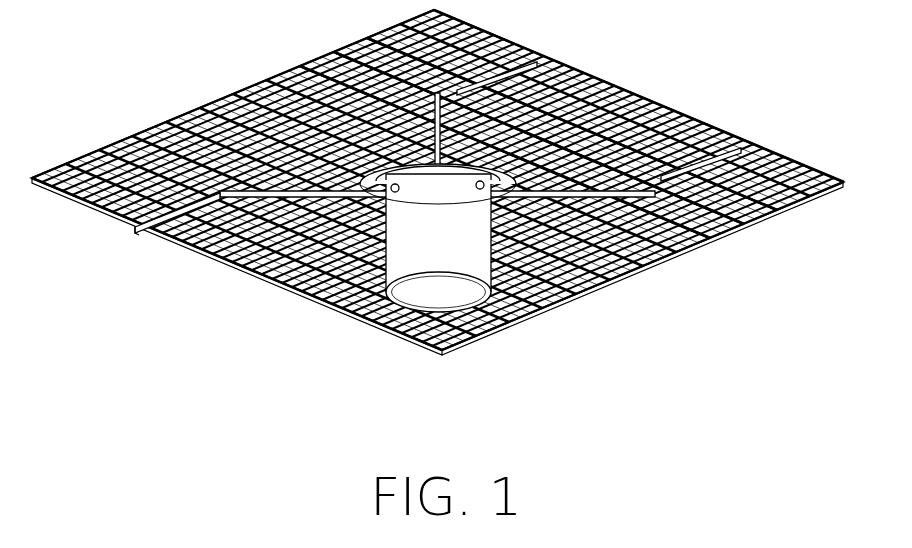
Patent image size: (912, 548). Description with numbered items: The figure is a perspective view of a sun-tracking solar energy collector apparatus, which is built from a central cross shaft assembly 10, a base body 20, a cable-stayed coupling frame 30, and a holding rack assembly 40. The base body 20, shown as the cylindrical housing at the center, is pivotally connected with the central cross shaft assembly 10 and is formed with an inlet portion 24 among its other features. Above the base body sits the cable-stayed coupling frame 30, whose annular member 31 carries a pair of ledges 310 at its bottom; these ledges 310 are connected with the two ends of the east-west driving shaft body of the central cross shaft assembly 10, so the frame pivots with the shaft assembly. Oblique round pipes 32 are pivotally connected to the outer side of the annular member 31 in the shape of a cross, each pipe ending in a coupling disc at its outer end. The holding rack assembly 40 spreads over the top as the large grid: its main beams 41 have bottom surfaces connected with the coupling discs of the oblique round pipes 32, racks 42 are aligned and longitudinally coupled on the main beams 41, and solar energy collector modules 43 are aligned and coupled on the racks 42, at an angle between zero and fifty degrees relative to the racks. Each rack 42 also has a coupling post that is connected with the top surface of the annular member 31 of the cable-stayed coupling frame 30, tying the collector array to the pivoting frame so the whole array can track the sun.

The central cross shaft assembly 10 is at (438, 212).
The base body 20 is at (438, 293).
The inlet portion 24 is at (346, 320).
The cable-stayed coupling frame 30 is at (432, 302).
The annular member 31 is at (548, 302).
The oblique round pipes 32 is at (597, 268).
The holding rack assembly 40 is at (443, 217).
The main beams 41 is at (713, 240).
The racks 42 is at (756, 225).
The solar energy collector modules 43 is at (786, 205).
The ledges 310 is at (520, 292).